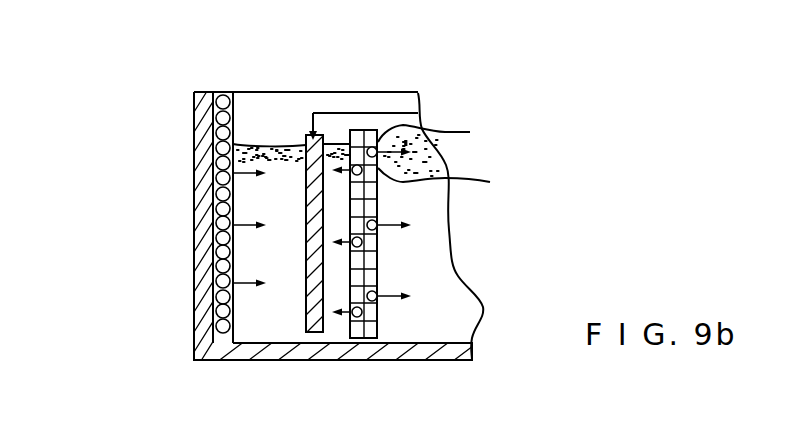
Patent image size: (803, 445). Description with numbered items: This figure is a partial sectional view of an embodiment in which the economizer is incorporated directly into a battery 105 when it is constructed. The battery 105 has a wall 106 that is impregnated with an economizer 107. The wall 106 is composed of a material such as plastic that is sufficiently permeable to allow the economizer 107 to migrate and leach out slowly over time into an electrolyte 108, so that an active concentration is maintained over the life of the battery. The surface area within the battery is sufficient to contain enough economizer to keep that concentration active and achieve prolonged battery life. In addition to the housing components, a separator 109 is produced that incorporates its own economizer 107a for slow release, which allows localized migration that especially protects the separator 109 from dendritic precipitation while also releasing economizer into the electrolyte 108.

The battery 105 is at (170, 338).
The wall 106 is at (225, 92).
The economizer 107 is at (194, 148).
The economizer 107a is at (443, 234).
The electrolyte 108 is at (453, 303).
The separator 109 is at (374, 147).